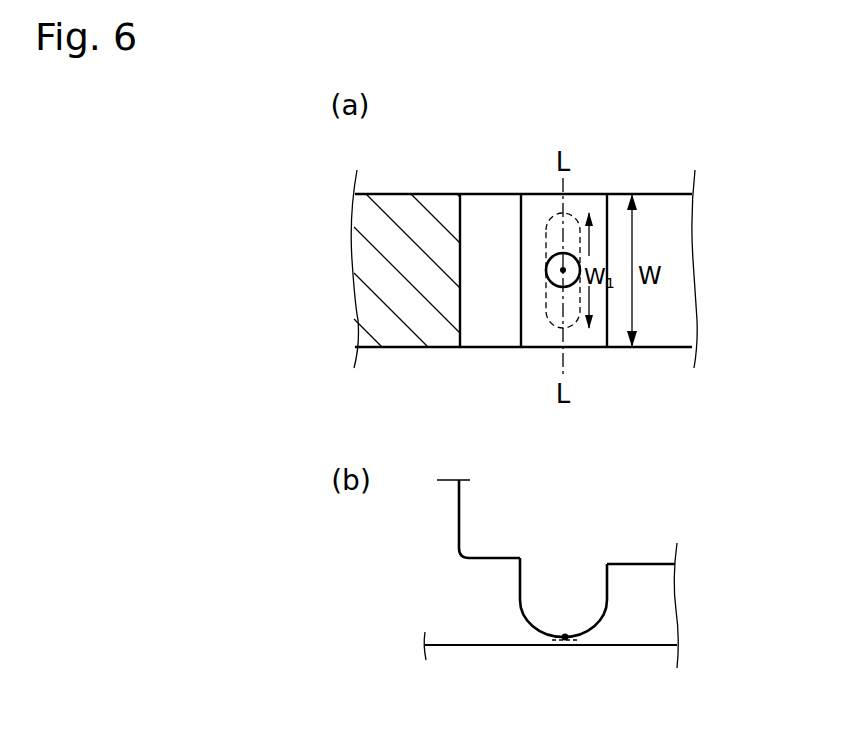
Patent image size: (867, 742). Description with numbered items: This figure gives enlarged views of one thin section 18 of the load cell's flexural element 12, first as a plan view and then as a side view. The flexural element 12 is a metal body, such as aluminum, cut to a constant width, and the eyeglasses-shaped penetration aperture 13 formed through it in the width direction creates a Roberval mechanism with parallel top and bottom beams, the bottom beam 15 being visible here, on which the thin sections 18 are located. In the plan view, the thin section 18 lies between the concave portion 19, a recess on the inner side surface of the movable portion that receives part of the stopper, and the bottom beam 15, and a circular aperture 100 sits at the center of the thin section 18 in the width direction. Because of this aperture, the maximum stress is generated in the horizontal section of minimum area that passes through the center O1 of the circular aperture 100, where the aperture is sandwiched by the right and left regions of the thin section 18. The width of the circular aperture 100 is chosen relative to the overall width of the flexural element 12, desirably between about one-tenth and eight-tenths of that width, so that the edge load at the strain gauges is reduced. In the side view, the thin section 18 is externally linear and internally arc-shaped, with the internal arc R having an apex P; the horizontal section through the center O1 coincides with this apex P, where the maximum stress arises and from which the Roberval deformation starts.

The flexural element 12 is at (664, 176).
The penetration aperture 13 is at (582, 595).
The bottom beam 15 is at (665, 348).
The thin section 18 is at (538, 330).
The concave portion 19 is at (499, 214).
The circular aperture 100 is at (570, 257).
The center of the circular aperture O1 is at (547, 267).
The apex of the internal arc P is at (563, 634).
The internal arc R is at (603, 612).